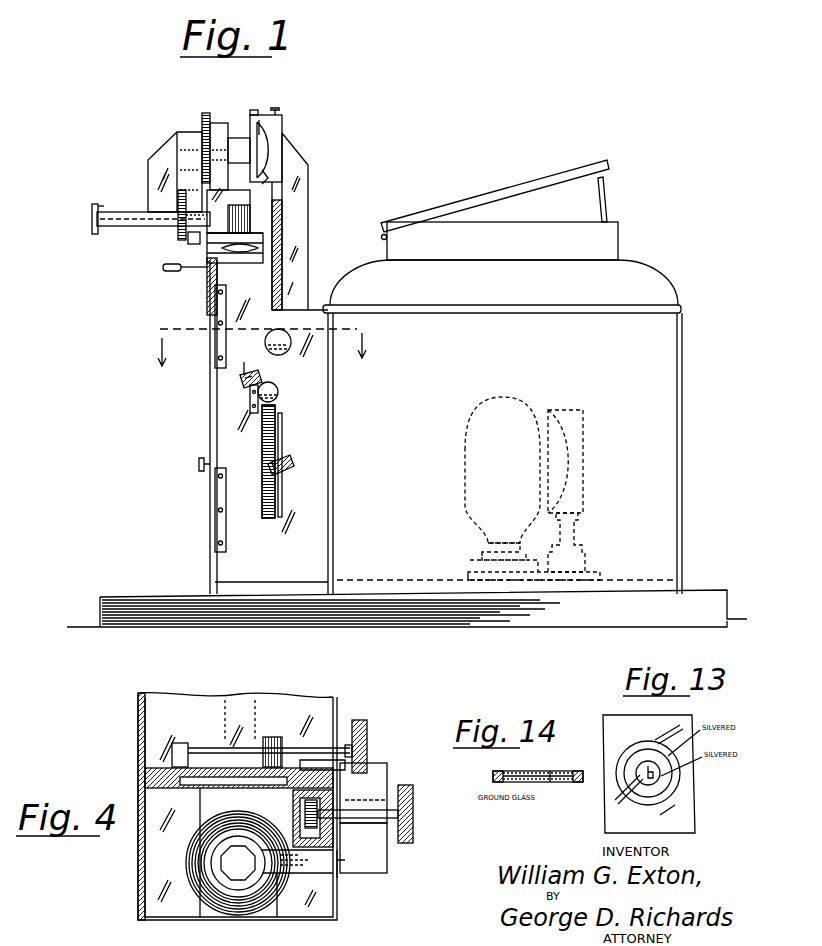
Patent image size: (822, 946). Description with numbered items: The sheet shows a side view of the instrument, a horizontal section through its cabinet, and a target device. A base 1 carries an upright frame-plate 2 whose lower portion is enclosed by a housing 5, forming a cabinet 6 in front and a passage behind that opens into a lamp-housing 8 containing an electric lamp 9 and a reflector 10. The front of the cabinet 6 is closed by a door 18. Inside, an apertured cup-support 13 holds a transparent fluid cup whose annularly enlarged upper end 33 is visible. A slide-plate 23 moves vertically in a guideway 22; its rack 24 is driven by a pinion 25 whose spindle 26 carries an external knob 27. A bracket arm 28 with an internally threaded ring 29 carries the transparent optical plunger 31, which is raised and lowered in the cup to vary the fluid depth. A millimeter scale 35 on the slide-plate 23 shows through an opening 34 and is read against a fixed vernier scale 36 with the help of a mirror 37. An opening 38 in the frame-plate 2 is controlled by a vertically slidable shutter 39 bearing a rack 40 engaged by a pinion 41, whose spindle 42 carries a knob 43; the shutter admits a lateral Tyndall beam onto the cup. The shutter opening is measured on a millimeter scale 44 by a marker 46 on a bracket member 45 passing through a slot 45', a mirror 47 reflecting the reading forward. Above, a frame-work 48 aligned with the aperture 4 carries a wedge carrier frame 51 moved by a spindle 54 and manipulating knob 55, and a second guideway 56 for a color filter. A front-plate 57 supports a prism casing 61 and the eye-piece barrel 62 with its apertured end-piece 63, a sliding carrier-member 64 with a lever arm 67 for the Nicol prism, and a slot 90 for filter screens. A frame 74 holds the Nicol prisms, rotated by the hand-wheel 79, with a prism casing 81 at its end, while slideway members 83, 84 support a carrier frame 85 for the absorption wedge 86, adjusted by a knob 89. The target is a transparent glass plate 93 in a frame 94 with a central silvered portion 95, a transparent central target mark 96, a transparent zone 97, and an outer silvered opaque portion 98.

In FIG. 1, the base 1 is at (224, 627).
In FIG. 1, the frame-plate 2 is at (296, 285).
In FIG. 4, the frame-plate 2 is at (150, 778).
In FIG. 1, the aperture 4 is at (253, 354).
In FIG. 1, the housing 5 is at (232, 432).
In FIG. 4, the housing 5 is at (140, 842).
In FIG. 4, the cabinet 6 is at (177, 852).
In FIG. 1, the lamp-housing 8 is at (448, 377).
In FIG. 1, the electric lamp 9 is at (465, 434).
In FIG. 1, the reflector 10 is at (575, 410).
In FIG. 4, the apertured cup-support 13 is at (210, 812).
In FIG. 1, the door 18 is at (205, 460).
In FIG. 4, the guideway 22 is at (300, 798).
In FIG. 4, the slide-plate 23 is at (288, 870).
In FIG. 4, the rack 24 is at (300, 830).
In FIG. 4, the pinion 25 is at (375, 795).
In FIG. 4, the spindle 26 is at (412, 800).
In FIG. 1, the knob 27 is at (292, 340).
In FIG. 4, the knob 27 is at (413, 812).
In FIG. 4, the bracket arm 28 is at (292, 890).
In FIG. 4, the internally threaded ring 29 is at (218, 882).
In FIG. 4, the transparent optical plunger 31 is at (230, 866).
In FIG. 4, the annularly enlarged upper end 33 is at (190, 852).
In FIG. 1, the opening 34 is at (240, 388).
In FIG. 4, the opening 34 is at (345, 862).
In FIG. 1, the millimeter scale 35 is at (247, 357).
In FIG. 1, the fixed vernier scale 36 is at (262, 372).
In FIG. 1, the mirror 37 is at (250, 402).
In FIG. 4, the mirror 37 is at (380, 862).
In FIG. 4, the opening 38 is at (182, 744).
In FIG. 4, the vertically slidable shutter 39 is at (226, 700).
In FIG. 4, the rack 40 is at (255, 760).
In FIG. 4, the pinion 41 is at (276, 737).
In FIG. 4, the spindle 42 is at (246, 748).
In FIG. 1, the knob 43 is at (278, 396).
In FIG. 4, the knob 43 is at (367, 726).
In FIG. 1, the millimeter scale 44 is at (262, 505).
In FIG. 1, the bracket member 45 is at (296, 463).
In FIG. 4, the bracket member 45 is at (322, 747).
In FIG. 1, the slot 45' is at (299, 465).
In FIG. 1, the marker 46 is at (276, 452).
In FIG. 1, the mirror 47 is at (290, 470).
In FIG. 4, the mirror 47 is at (387, 770).
In FIG. 1, the frame-work 48 is at (262, 235).
In FIG. 1, the carrier frame 51 is at (263, 256).
In FIG. 1, the spindle 54 is at (199, 270).
In FIG. 1, the manipulating knob 55 is at (164, 280).
In FIG. 1, the second guideway 56 is at (263, 243).
In FIG. 1, the front-plate 57 is at (230, 106).
In FIG. 1, the casing 61 is at (250, 214).
In FIG. 1, the eye-piece barrel 62 is at (152, 228).
In FIG. 1, the apertured end-piece 63 is at (93, 231).
In FIG. 1, the carrier-member 64 is at (195, 244).
In FIG. 1, the lever arm 67 is at (188, 205).
In FIG. 1, the frame 74 is at (260, 134).
In FIG. 1, the external hand-wheel 79 is at (206, 113).
In FIG. 1, the casing 81 is at (160, 174).
In FIG. 1, the slideway member 83 is at (283, 126).
In FIG. 1, the slideway member 84 is at (257, 108).
In FIG. 1, the carrier frame 85 is at (272, 150).
In FIG. 1, the absorption wedge 86 is at (264, 184).
In FIG. 1, the knob 89 is at (281, 112).
In FIG. 1, the slot 90 is at (100, 208).
In FIG. 14, the transparent glass plate 93 is at (555, 783).
In FIG. 14, the frame 94 is at (585, 777).
In FIG. 14, the central silvered portion 95 is at (546, 773).
In FIG. 13, the central silvered portion 95 is at (660, 792).
In FIG. 14, the transparent central target mark 96 is at (536, 771).
In FIG. 13, the transparent central target mark 96 is at (655, 776).
In FIG. 14, the transparent zone 97 is at (556, 774).
In FIG. 13, the transparent zone 97 is at (662, 781).
In FIG. 14, the outer silvered opaque portion 98 is at (512, 771).
In FIG. 13, the outer silvered opaque portion 98 is at (665, 805).